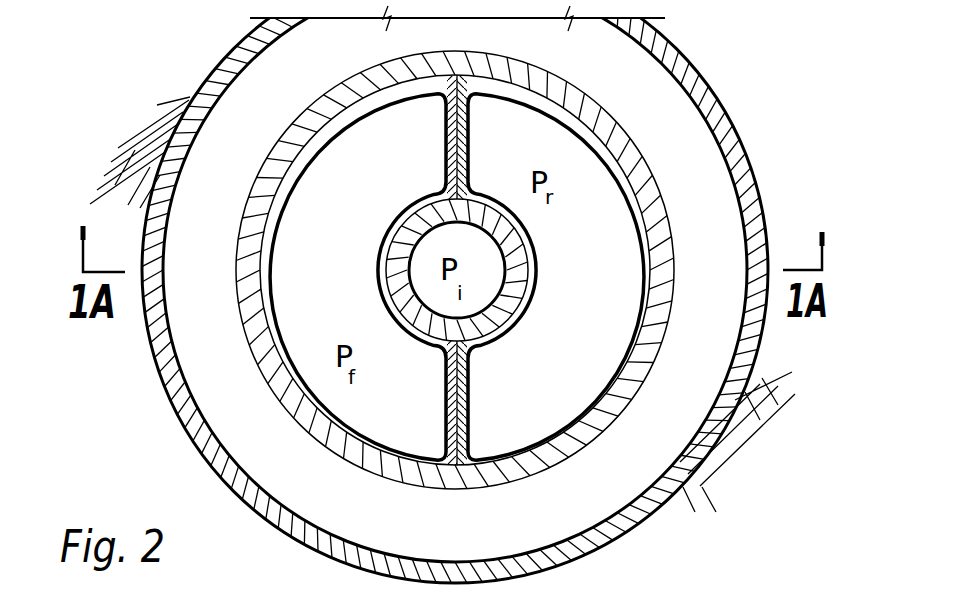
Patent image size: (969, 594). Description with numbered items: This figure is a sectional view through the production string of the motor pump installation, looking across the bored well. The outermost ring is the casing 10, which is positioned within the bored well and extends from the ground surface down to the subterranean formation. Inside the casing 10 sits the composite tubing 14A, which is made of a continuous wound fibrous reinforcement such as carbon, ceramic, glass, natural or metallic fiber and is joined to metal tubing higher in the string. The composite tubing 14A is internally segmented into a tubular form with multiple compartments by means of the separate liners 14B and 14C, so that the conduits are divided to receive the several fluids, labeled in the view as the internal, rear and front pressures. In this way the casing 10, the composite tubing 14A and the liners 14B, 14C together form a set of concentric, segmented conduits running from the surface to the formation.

The casing 10 is at (755, 224).
The composite tubing 14A is at (648, 173).
The liner 14B is at (558, 112).
The liner 14C is at (368, 432).